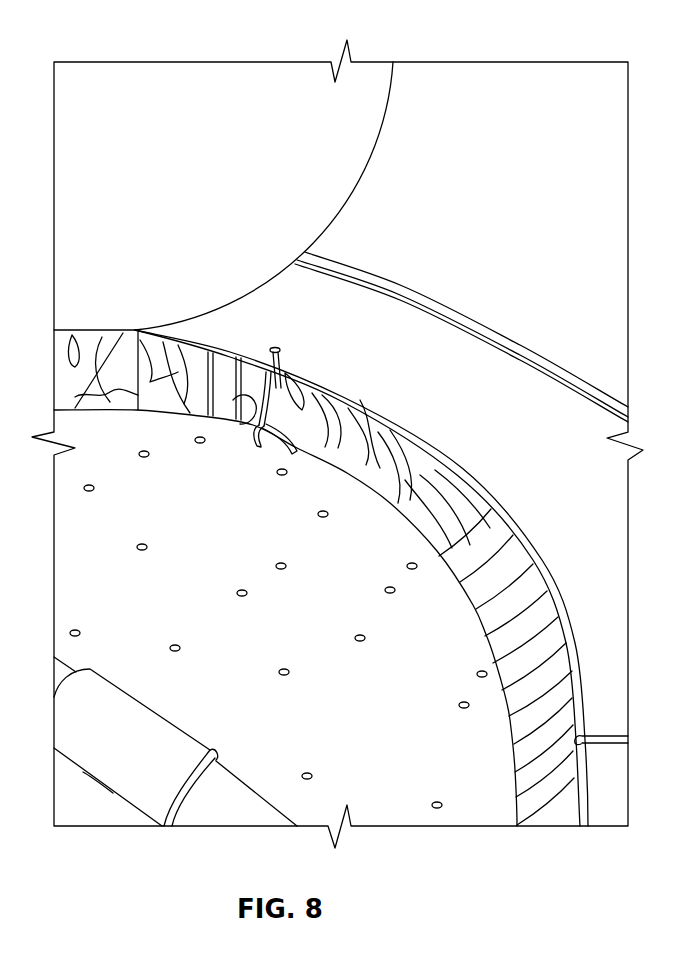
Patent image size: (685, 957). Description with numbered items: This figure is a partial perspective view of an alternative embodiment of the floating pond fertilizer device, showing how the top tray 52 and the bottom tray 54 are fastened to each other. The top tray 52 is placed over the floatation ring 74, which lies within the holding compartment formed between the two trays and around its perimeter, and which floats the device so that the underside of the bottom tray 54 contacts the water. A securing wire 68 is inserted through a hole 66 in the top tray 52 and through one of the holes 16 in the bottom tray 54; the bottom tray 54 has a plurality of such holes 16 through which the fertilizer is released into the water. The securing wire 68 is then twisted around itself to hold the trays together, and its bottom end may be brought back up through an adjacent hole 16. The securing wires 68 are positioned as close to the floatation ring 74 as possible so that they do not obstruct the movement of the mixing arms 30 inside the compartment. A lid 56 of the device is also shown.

The holes 16 is at (353, 638).
The mixing arms 30 is at (202, 812).
The top tray 52 is at (493, 373).
The bottom tray 54 is at (172, 628).
The lid 56 is at (262, 75).
The hole 66 is at (281, 337).
The securing wire 68 is at (260, 397).
The floatation ring 74 is at (552, 808).